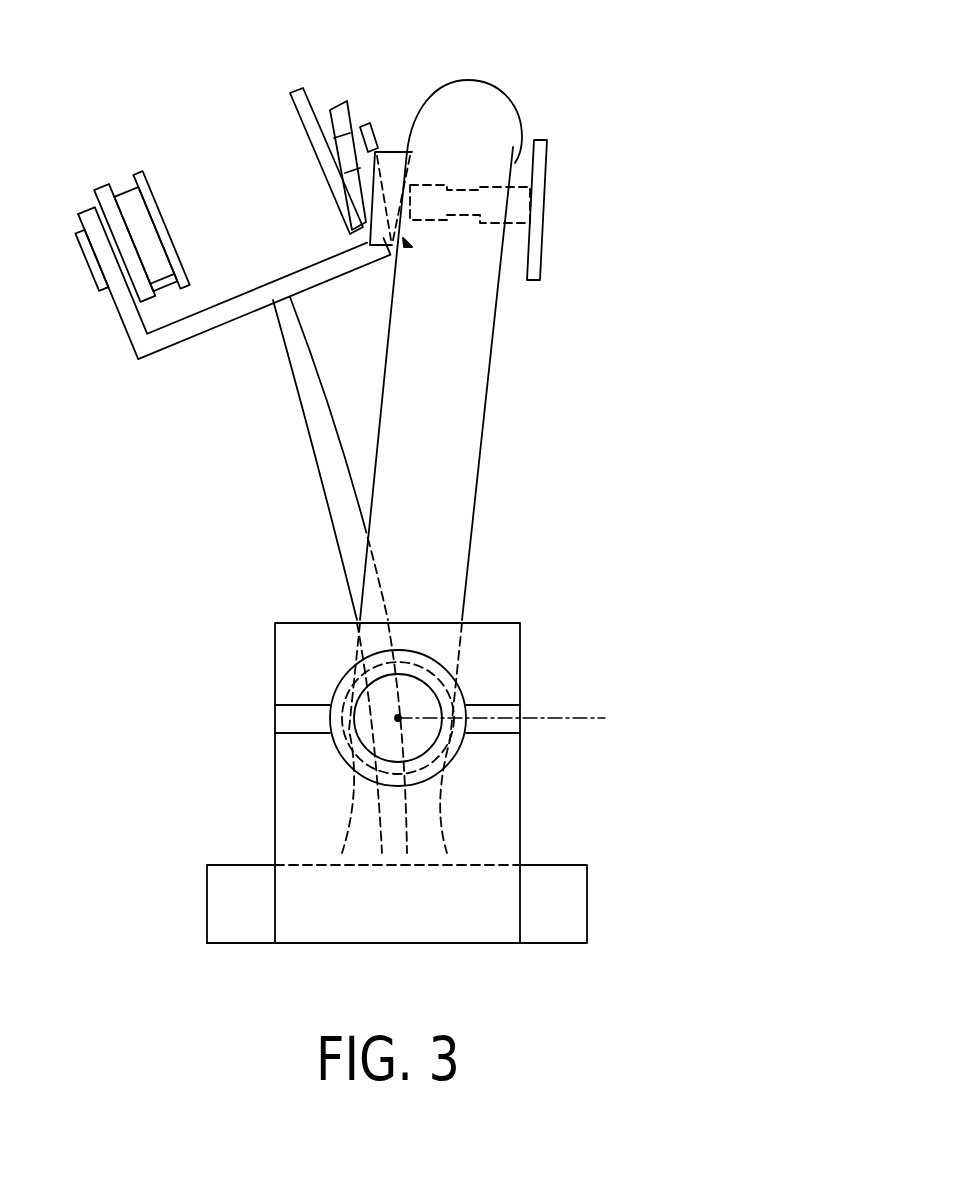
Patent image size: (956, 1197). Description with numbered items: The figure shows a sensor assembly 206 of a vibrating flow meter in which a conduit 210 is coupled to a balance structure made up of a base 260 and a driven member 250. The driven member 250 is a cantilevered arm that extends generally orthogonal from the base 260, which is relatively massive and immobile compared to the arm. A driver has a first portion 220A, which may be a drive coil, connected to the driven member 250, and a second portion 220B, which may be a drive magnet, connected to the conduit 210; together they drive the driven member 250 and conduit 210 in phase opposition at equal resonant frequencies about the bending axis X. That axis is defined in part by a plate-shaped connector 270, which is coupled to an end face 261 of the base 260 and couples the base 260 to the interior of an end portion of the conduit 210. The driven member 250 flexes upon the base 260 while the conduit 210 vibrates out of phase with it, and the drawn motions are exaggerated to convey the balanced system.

The sensor assembly 206 is at (673, 228).
The conduit 210 is at (478, 333).
The first portion of the driver 220A is at (120, 192).
The second portion of the driver 220B is at (390, 150).
The driven member 250 is at (275, 297).
The base 260 is at (207, 905).
The end face of the base 261 is at (242, 917).
The connector 270 is at (295, 652).